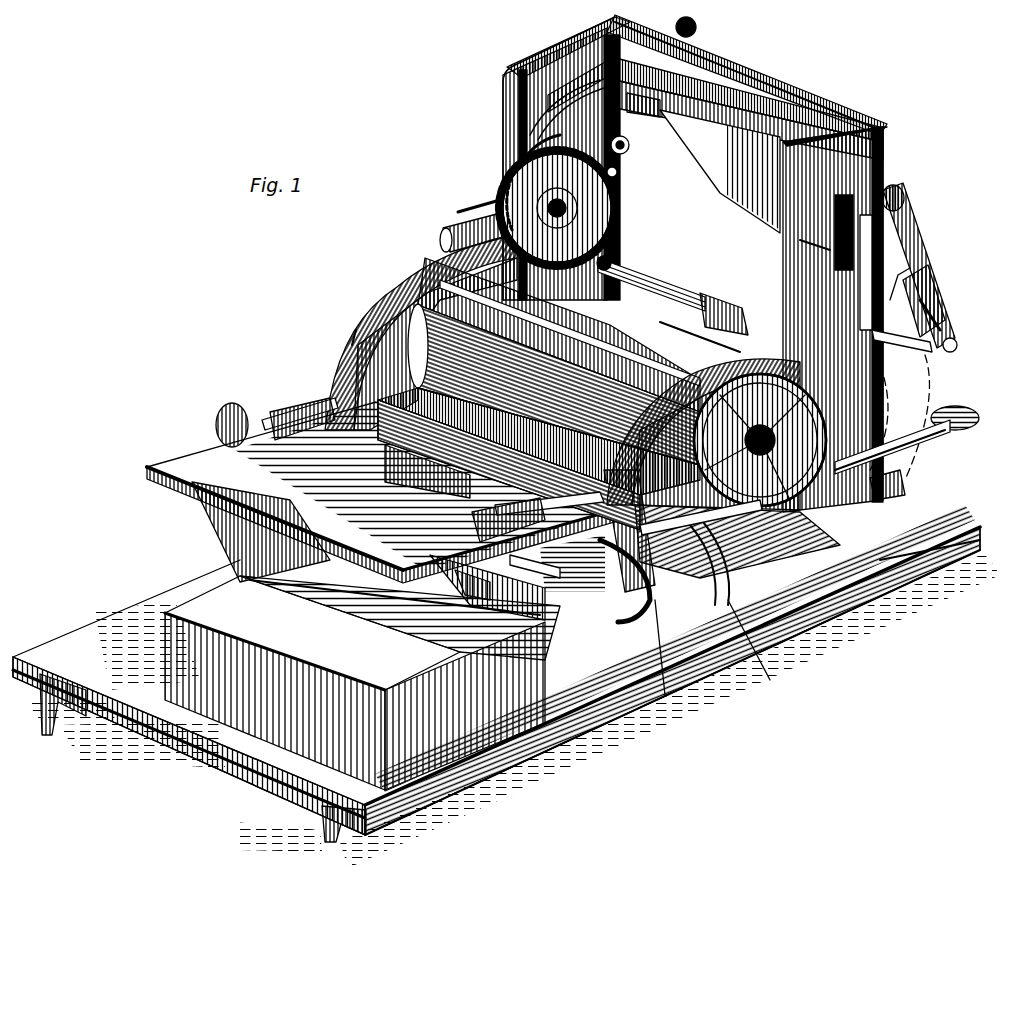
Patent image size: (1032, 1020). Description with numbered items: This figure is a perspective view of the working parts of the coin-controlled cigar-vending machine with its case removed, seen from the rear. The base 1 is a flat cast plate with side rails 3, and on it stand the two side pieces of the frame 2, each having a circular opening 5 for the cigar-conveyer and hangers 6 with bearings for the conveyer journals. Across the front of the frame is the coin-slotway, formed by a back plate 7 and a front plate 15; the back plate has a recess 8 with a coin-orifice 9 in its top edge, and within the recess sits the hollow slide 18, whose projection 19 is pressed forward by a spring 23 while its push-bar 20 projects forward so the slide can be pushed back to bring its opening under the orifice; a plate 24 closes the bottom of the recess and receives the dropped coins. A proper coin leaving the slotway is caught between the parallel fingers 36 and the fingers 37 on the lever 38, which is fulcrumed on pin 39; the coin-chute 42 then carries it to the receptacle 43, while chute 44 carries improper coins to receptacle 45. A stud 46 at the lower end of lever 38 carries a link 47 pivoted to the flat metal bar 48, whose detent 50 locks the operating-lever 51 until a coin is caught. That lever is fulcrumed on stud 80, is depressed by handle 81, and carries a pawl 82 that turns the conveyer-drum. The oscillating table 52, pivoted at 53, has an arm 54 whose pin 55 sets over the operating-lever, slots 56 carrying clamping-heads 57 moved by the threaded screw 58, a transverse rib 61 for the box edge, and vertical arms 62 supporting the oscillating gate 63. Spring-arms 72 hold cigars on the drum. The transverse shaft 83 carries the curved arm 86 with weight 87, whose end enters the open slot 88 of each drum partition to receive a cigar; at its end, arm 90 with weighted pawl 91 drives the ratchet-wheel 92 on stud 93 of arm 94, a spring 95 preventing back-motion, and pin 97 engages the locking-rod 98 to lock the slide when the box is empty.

The base 1 is at (160, 612).
The frame 2 is at (503, 92).
The side rails 3 is at (85, 715).
The circular opening 5 is at (420, 268).
The hangers 6 is at (723, 468).
The plate 7 is at (870, 135).
The recess 8 is at (705, 62).
The coin-orifice 9 is at (700, 50).
The plate 15 is at (790, 96).
The hollow slide 18 is at (550, 55).
The projection 19 is at (585, 55).
The push-bar 20 is at (696, 27).
The spring 23 is at (735, 120).
The plate 24 is at (655, 112).
The parallel fingers 36 is at (932, 290).
The fingers 37 is at (942, 310).
The lever 38 is at (917, 262).
The pin 39 is at (905, 225).
The coin-chute 42 is at (950, 432).
The receptacle 43 is at (355, 683).
The chute 44 is at (800, 240).
The receptacle 45 is at (400, 618).
The stud 46 is at (935, 345).
The link 47 is at (957, 348).
The flat metal bar 48 is at (915, 272).
The detent 50 is at (905, 490).
The operating-lever 51 is at (940, 448).
The oscillating table 52 is at (200, 485).
The pivot 53 is at (478, 600).
The arm 54 is at (642, 633).
The pin or screw 55 is at (740, 609).
The slots 56 is at (305, 425).
The clamping-heads 57 is at (290, 418).
The right and left hand threaded screw 58 is at (235, 420).
The transverse rib 61 is at (509, 465).
The vertical arm 62 is at (360, 325).
The oscillating gate 63 is at (539, 399).
The spring-arms 72 is at (612, 263).
The stud 80 is at (905, 555).
The handle 81 is at (980, 416).
The pawl 82 is at (760, 530).
The transverse shaft 83 is at (650, 290).
The curved arm 86 is at (700, 337).
The weight 87 is at (740, 312).
The open slot 88 is at (612, 340).
The arm 90 is at (618, 170).
The weighted pawl 91 is at (522, 152).
The ratchet-wheel 92 is at (520, 193).
The stud 93 is at (567, 208).
The arm 94 is at (443, 232).
The spring 95 is at (520, 122).
The pin 97 is at (460, 212).
The locking-rod 98 is at (630, 145).